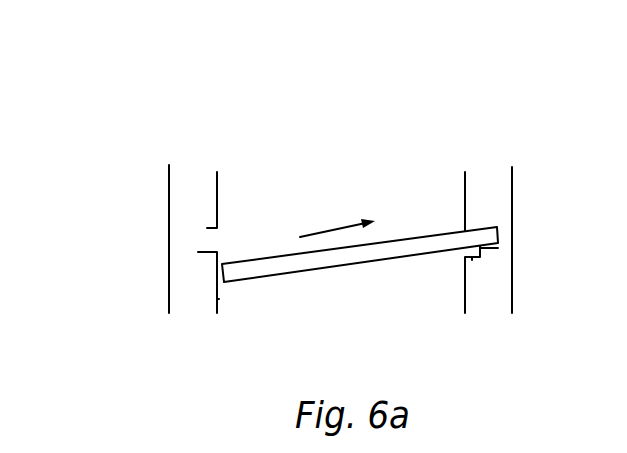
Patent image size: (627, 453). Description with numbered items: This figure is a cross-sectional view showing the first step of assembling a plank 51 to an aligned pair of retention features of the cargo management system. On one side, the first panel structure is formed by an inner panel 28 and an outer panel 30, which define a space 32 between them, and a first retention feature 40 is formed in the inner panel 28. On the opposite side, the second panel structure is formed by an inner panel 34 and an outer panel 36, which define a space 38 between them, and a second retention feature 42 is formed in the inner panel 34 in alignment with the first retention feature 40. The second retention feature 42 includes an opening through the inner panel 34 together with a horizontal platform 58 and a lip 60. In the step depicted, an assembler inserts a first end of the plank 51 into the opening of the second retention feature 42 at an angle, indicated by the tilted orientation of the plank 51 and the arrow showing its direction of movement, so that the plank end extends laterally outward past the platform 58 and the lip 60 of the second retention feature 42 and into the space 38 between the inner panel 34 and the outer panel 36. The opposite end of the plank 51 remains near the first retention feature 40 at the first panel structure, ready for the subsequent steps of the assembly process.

The inner panel 28 is at (218, 299).
The outer panel 30 is at (169, 273).
The space 32 is at (194, 297).
The inner panel 34 is at (463, 298).
The outer panel 36 is at (513, 293).
The space 38 is at (488, 177).
The first retention feature 40 is at (207, 222).
The second retention feature 42 is at (457, 221).
The plank 51 is at (280, 254).
The horizontal platform 58 is at (472, 257).
The lip 60 is at (480, 250).